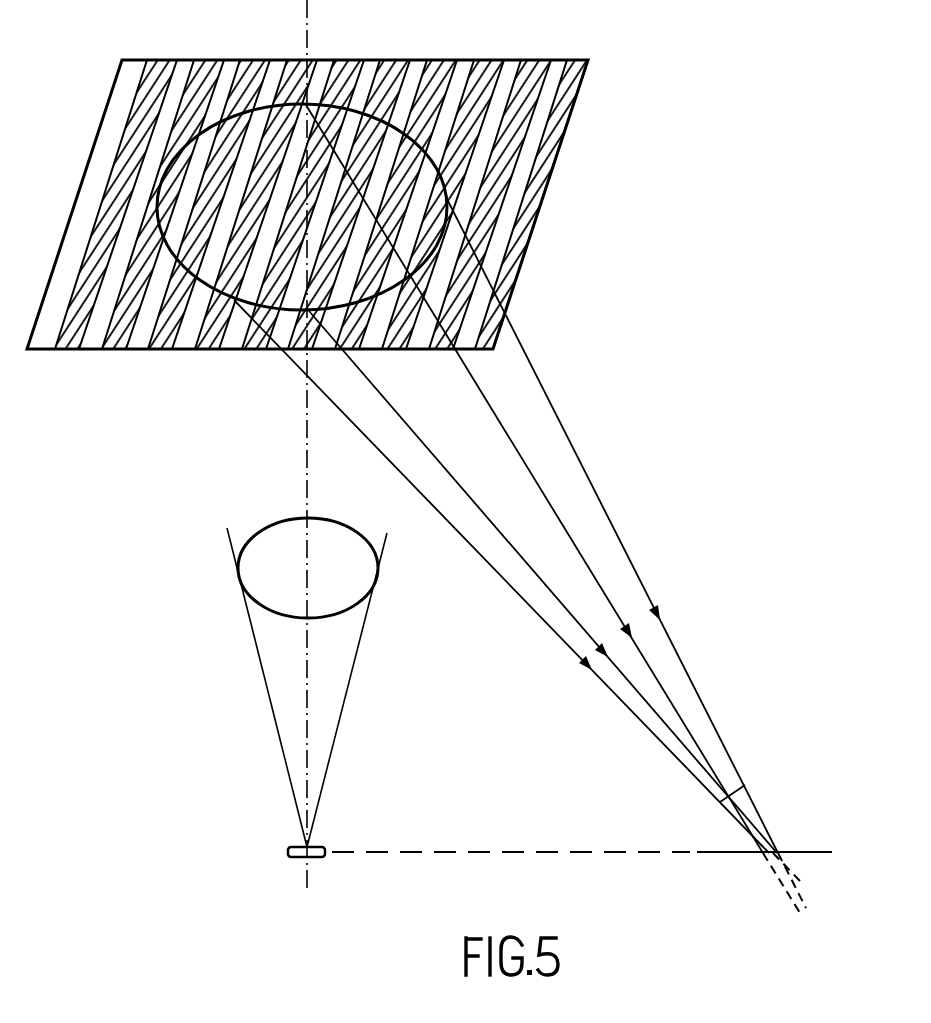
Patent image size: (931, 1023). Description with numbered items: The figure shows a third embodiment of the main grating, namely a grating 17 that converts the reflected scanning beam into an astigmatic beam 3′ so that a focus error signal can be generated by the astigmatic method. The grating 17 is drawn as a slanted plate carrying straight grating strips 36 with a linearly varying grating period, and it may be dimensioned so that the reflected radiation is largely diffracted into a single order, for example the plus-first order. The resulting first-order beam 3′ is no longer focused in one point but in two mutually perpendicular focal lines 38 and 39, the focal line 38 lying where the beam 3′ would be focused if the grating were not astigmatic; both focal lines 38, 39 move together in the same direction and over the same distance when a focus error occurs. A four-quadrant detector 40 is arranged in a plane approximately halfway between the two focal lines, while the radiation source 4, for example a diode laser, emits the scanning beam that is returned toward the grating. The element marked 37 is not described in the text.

The grating 17 is at (588, 117).
The grating strips 36 is at (213, 58).
The strip of the grating 37 is at (277, 70).
The astigmatic beam 3′ is at (588, 585).
The focal line 38 is at (733, 795).
The focal line 39 is at (795, 893).
The four-quadrant detector 40 is at (812, 852).
The radiation source 4 is at (313, 858).